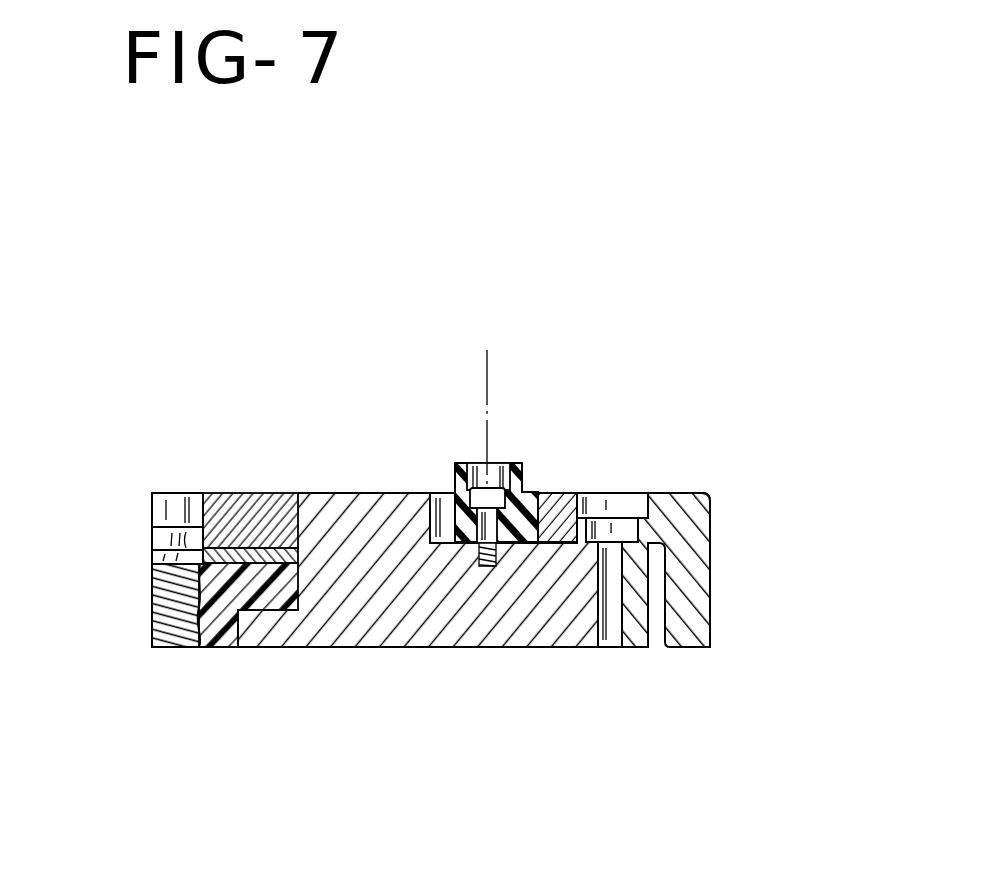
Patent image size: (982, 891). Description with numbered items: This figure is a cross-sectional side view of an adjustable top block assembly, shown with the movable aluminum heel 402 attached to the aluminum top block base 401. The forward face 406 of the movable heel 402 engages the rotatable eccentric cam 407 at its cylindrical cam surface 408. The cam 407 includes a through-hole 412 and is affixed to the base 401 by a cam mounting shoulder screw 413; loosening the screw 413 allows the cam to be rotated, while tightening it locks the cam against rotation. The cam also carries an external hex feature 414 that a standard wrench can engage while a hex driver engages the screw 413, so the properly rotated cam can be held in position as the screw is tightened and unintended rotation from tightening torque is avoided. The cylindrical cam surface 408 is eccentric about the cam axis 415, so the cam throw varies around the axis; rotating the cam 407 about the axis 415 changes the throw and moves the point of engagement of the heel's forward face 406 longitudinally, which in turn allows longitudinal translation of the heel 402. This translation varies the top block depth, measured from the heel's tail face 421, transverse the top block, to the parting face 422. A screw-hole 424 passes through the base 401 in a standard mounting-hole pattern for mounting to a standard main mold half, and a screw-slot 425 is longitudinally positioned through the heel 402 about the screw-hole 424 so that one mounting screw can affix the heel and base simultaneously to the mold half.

The top block base 401 is at (210, 493).
The movable heel 402 is at (682, 492).
The forward face 406 is at (657, 468).
The rotatable eccentric cam 407 is at (452, 480).
The cylindrical cam surface 408 is at (540, 520).
The through-hole 412 is at (575, 430).
The cam mounting shoulder screw 413 is at (487, 537).
The external hex feature 414 is at (517, 463).
The cam axis 415 is at (487, 382).
The tail face 421 is at (712, 600).
The parting face 422 is at (150, 565).
The screw-hole 424 is at (615, 647).
The screw-slot 425 is at (642, 527).